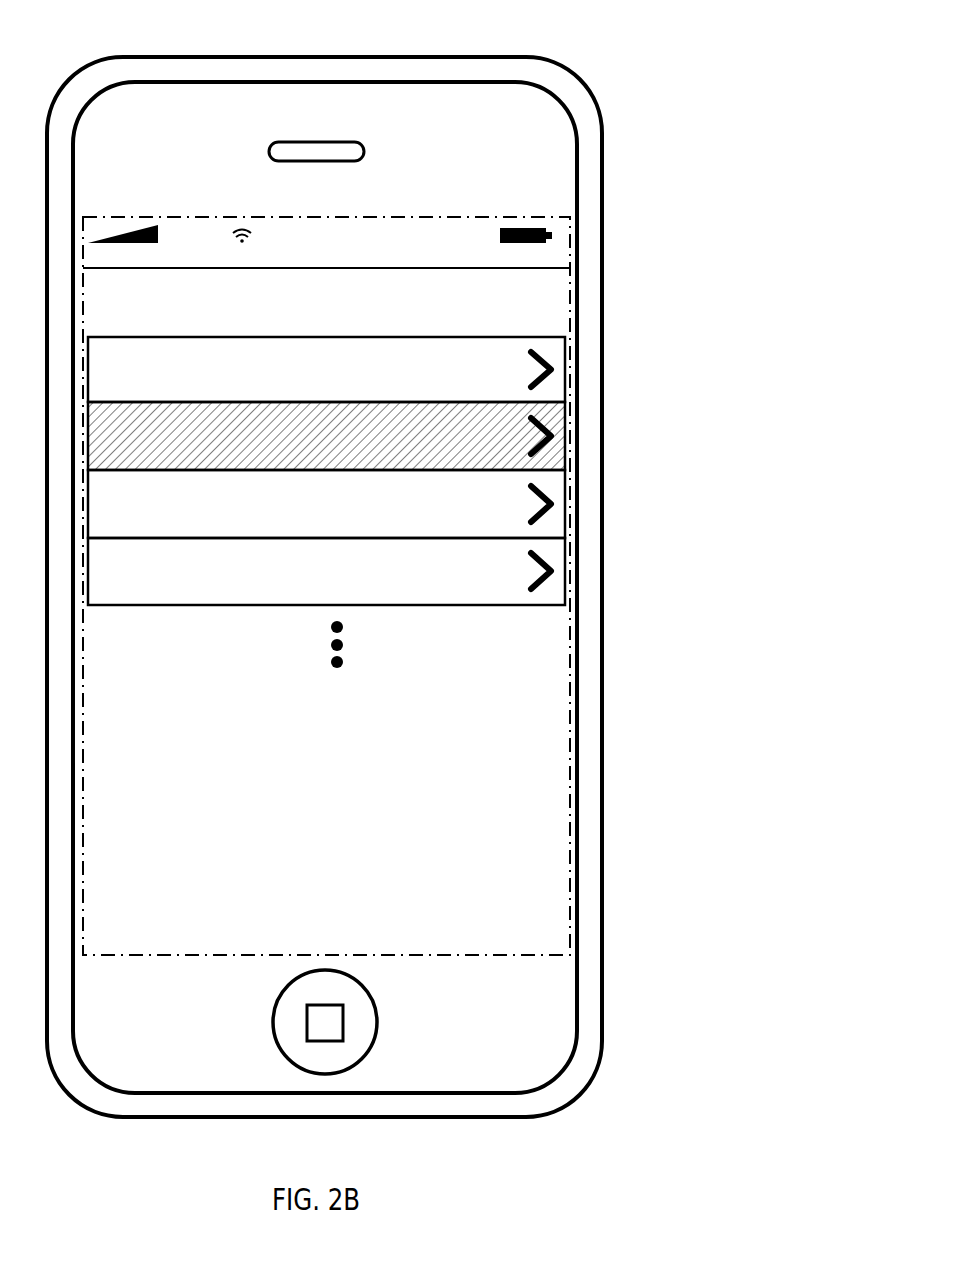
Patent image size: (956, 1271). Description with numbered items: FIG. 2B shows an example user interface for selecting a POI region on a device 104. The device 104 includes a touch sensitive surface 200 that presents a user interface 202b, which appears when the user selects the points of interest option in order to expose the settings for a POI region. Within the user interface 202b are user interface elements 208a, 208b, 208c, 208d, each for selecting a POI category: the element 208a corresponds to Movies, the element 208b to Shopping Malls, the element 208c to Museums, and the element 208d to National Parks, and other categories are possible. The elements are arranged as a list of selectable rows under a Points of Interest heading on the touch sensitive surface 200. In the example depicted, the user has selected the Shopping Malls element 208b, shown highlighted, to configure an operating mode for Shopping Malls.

The device 104 is at (571, 73).
The touch sensitive surface 200 is at (570, 230).
The user interface 202b is at (520, 302).
The user interface element 208a is at (555, 388).
The Shopping Malls element 208b is at (557, 458).
The user interface element 208c is at (557, 502).
The user interface element 208d is at (557, 572).